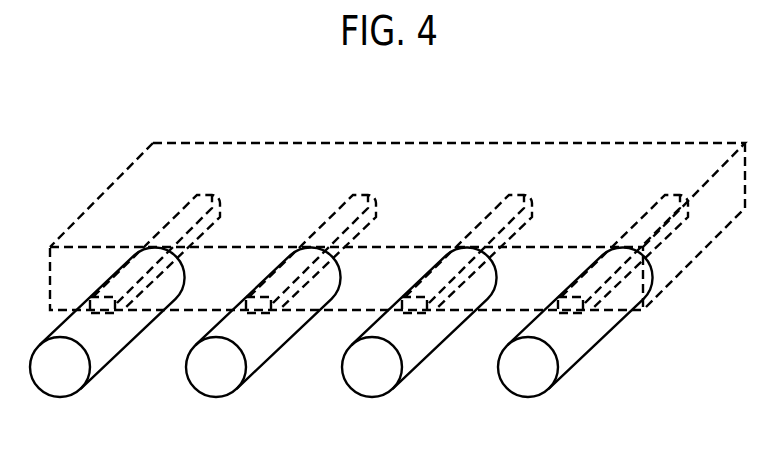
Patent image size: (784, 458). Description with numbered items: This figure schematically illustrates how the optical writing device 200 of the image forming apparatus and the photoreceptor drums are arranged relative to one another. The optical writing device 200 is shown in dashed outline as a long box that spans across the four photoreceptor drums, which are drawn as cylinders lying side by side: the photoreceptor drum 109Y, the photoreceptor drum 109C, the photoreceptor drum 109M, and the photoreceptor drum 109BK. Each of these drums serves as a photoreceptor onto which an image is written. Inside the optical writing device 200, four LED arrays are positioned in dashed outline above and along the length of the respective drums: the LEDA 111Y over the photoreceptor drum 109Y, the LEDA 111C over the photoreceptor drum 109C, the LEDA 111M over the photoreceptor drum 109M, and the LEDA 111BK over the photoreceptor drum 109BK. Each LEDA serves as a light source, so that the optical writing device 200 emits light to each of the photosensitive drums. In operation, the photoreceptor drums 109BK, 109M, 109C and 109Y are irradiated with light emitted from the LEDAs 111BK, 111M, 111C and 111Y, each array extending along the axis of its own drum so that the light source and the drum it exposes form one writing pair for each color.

The optical writing device 200 is at (708, 140).
The photoreceptor drum 109Y is at (107, 345).
The photoreceptor drum 109C is at (263, 345).
The photoreceptor drum 109M is at (419, 345).
The photoreceptor drum 109BK is at (575, 345).
The LEDA (LED array) 111Y is at (210, 192).
The LEDA (LED array) 111C is at (323, 233).
The LEDA (LED array) 111M is at (481, 233).
The LEDA (LED array) 111BK is at (635, 233).